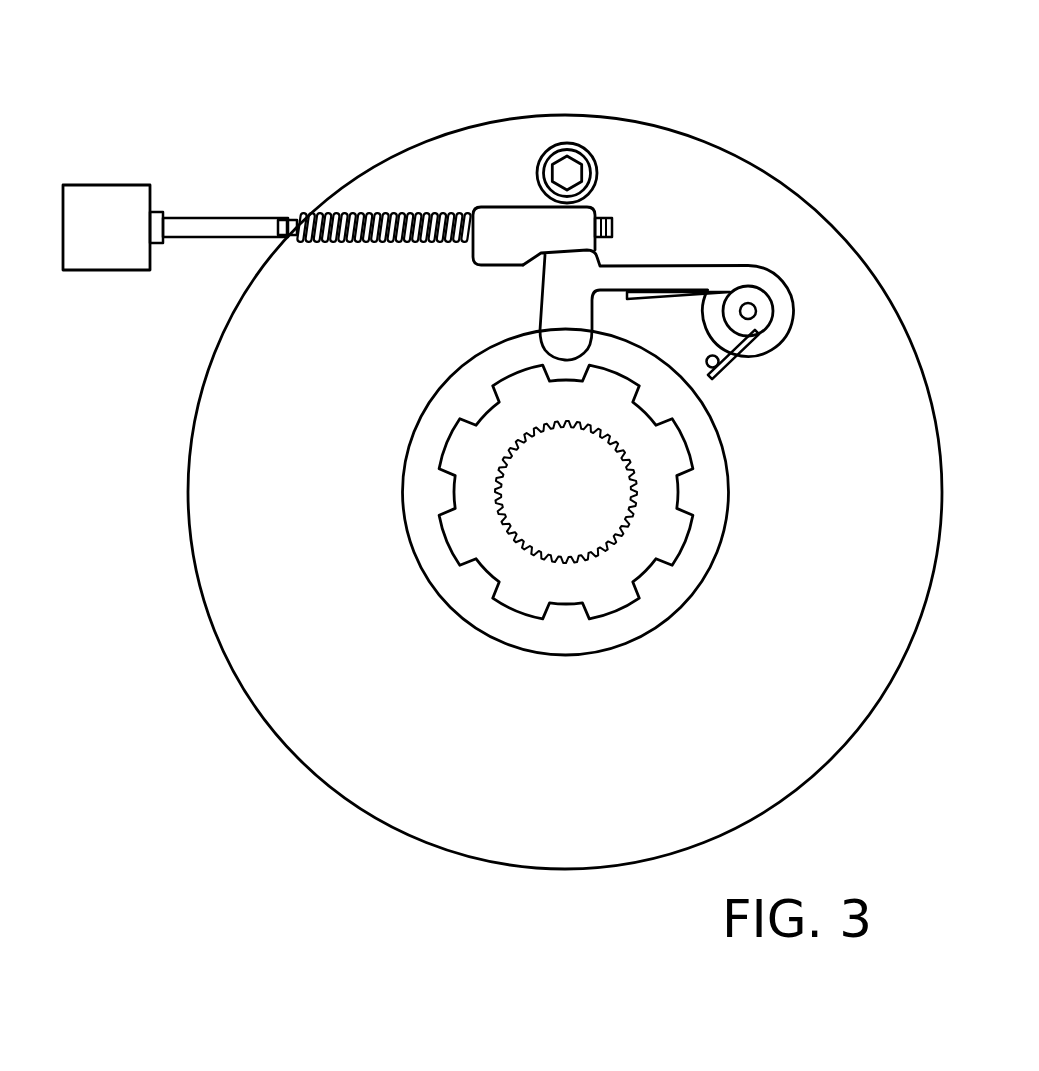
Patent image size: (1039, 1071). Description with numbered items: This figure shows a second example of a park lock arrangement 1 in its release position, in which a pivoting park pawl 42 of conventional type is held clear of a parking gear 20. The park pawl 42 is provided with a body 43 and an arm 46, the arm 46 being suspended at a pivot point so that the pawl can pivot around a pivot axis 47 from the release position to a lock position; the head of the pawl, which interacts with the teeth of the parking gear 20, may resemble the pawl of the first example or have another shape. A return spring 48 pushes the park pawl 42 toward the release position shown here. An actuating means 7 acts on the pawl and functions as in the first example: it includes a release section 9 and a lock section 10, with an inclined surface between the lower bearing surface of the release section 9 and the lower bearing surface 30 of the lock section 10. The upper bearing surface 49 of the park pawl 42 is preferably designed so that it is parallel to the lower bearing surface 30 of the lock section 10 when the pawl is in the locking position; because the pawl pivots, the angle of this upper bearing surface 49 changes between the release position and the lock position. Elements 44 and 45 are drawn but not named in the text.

The park lock arrangement 1 is at (925, 98).
The actuating means 7 is at (538, 228).
The release section 9 is at (560, 225).
The lock section 10 is at (510, 228).
The parking gear 20 is at (477, 481).
The lower bearing surface 30 is at (502, 266).
The park pawl 42 is at (660, 212).
The body 43 is at (568, 302).
The pawl 44 is at (565, 342).
The pawl tooth 45 is at (572, 260).
The arm 46 is at (682, 265).
The pivot axis 47 is at (749, 309).
The return spring 48 is at (757, 368).
The upper bearing surface 49 is at (567, 246).